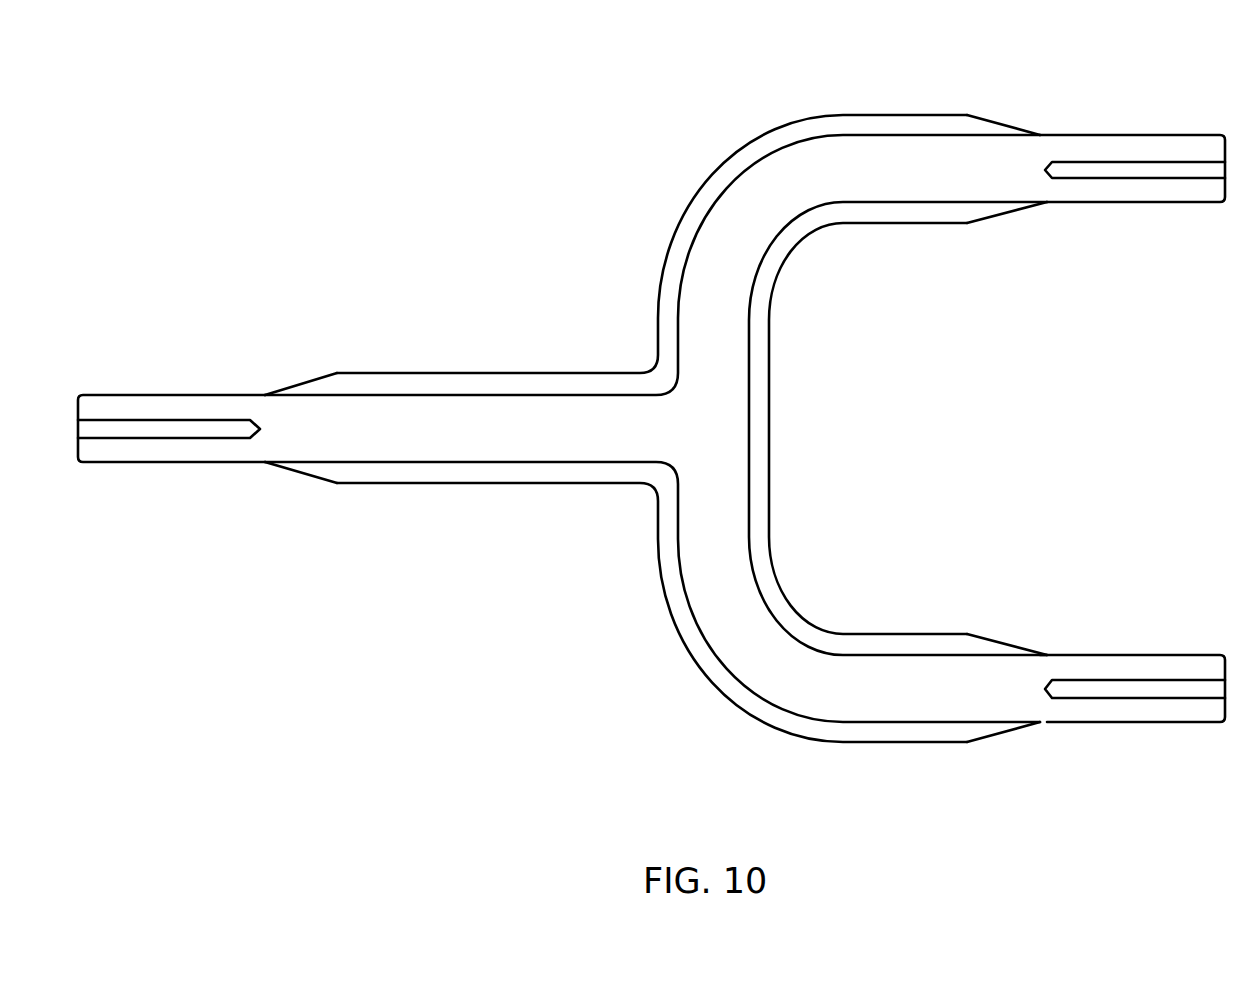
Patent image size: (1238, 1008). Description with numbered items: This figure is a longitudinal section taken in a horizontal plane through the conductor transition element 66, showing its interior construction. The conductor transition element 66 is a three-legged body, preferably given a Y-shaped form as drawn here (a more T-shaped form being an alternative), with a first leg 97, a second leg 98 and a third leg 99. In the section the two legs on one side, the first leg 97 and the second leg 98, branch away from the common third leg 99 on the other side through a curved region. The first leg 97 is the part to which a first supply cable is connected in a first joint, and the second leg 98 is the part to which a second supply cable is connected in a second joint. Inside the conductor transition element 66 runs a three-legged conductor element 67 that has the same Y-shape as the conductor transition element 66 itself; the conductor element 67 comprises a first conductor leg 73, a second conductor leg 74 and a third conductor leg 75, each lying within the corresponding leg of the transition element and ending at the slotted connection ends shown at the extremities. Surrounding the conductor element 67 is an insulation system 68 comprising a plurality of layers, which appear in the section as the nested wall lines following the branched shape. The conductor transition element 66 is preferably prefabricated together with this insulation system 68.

The conductor transition element 66 is at (651, 434).
The conductor element 67 is at (560, 412).
The insulation system 68 is at (668, 262).
The first conductor leg 73 is at (1062, 666).
The second conductor leg 74 is at (1008, 187).
The third conductor leg 75 is at (332, 415).
The first leg 97 is at (950, 748).
The second leg 98 is at (958, 113).
The third leg 99 is at (430, 372).